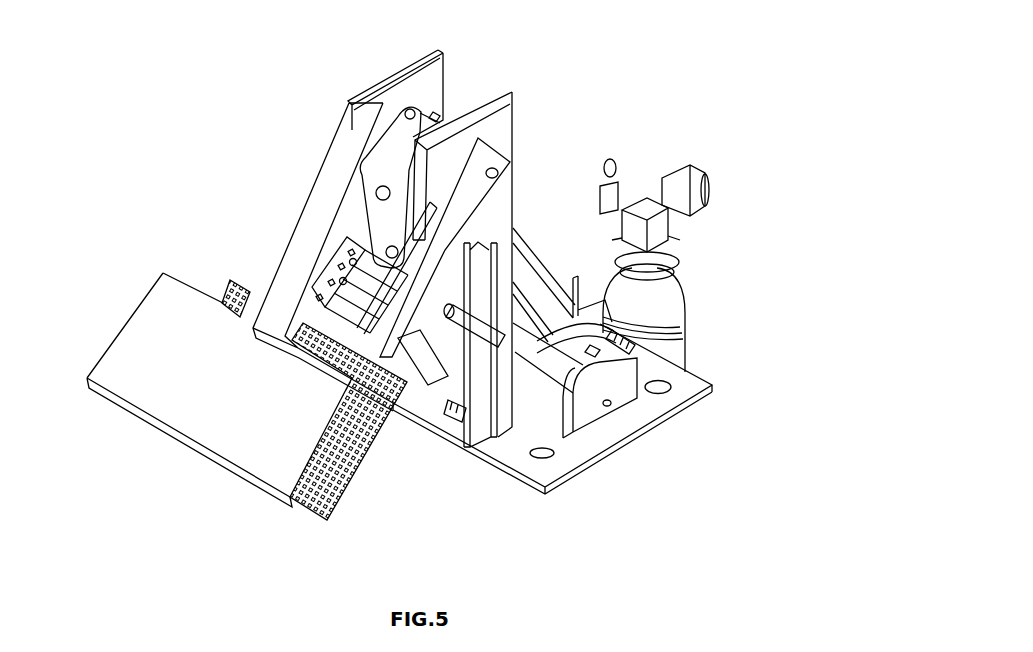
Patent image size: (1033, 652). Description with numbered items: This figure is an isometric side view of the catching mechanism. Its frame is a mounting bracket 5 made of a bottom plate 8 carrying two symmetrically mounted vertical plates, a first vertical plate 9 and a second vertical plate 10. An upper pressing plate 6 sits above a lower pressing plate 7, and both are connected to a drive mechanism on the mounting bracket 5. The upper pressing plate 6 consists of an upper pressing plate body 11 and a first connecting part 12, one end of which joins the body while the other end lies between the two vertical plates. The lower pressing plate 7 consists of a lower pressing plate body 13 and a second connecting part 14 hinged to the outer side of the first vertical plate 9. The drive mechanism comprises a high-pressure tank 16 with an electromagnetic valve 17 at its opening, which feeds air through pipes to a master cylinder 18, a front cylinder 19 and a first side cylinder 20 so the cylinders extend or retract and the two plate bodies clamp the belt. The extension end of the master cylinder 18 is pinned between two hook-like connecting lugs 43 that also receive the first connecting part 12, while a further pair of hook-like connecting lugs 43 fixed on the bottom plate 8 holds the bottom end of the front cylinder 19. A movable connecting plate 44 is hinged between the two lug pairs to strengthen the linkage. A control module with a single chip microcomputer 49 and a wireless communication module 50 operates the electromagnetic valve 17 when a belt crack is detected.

The mounting bracket 5 is at (696, 398).
The upper pressing plate 6 is at (158, 270).
The lower pressing plate 7 is at (229, 283).
The bottom plate 8 is at (661, 404).
The first vertical plate 9 is at (489, 97).
The second vertical plate 10 is at (385, 92).
The upper pressing plate body 11 is at (157, 341).
The first connecting part 12 is at (291, 269).
The lower pressing plate body 13 is at (313, 488).
The second connecting part 14 is at (496, 162).
The high-pressure tank 16 is at (661, 290).
The electromagnetic valve 17 is at (664, 240).
The master cylinder 18 is at (524, 268).
The front cylinder 19 is at (423, 386).
The first side cylinder 20 is at (542, 364).
The hook-like connecting lugs 43 is at (337, 160).
The movable connecting plate 44 is at (393, 278).
The single chip microcomputer 49 is at (606, 326).
The wireless communication module 50 is at (634, 345).